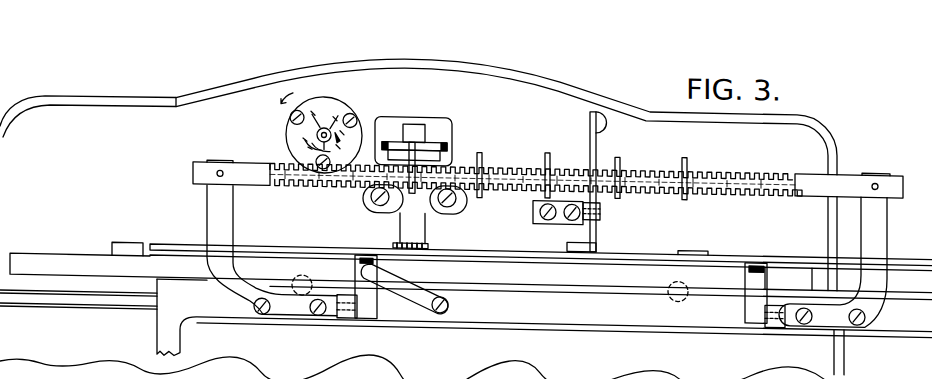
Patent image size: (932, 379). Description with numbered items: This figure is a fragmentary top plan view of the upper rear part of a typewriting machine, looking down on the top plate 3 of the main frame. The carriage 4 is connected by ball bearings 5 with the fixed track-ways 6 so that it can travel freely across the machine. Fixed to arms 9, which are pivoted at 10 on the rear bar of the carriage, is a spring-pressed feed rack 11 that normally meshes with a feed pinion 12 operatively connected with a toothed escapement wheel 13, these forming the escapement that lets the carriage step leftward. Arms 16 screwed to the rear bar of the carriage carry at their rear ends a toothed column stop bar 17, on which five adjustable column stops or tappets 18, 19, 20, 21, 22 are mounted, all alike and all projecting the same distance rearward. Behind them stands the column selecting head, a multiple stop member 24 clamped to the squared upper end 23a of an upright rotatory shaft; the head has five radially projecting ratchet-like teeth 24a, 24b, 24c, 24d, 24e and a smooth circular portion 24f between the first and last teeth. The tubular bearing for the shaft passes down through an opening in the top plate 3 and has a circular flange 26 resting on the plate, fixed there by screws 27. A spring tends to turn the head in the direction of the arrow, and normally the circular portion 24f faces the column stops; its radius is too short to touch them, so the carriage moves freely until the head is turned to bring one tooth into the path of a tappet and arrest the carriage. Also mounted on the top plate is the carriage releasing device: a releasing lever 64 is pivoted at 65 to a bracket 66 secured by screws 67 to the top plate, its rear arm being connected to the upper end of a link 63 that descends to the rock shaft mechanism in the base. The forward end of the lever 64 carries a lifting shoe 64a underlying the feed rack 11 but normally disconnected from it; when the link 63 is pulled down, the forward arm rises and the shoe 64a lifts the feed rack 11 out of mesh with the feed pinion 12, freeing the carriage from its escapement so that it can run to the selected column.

The top plate 3 is at (132, 112).
The carriage 4 is at (177, 343).
The ball bearings 5 is at (311, 275).
The track-ways 6 is at (62, 262).
The arms 9 is at (378, 293).
The pivot 10 is at (364, 315).
The feed rack 11 is at (248, 248).
The feed pinion 12 is at (428, 242).
The escapement wheel 13 is at (413, 126).
The arms 16 is at (208, 213).
The column stop bar 17 is at (259, 184).
The column stop 18 is at (421, 142).
The column stop 19 is at (485, 150).
The column stop 20 is at (552, 148).
The column stop 21 is at (621, 152).
The column stop 22 is at (688, 150).
The squared end 23a is at (302, 174).
The multiple stop member 24 is at (330, 148).
The tooth 24a is at (340, 143).
The tooth 24b is at (344, 130).
The tooth 24c is at (335, 116).
The tooth 24d is at (313, 110).
The tooth 24e is at (305, 138).
The circular portion 24f is at (310, 146).
The circular flange 26 is at (275, 122).
The screws 27 is at (284, 116).
The link 63 is at (601, 126).
The releasing lever 64 is at (597, 137).
The lifting shoe 64a is at (605, 228).
The pivot 65 is at (601, 204).
The bracket 66 is at (533, 207).
The screws 67 is at (555, 210).